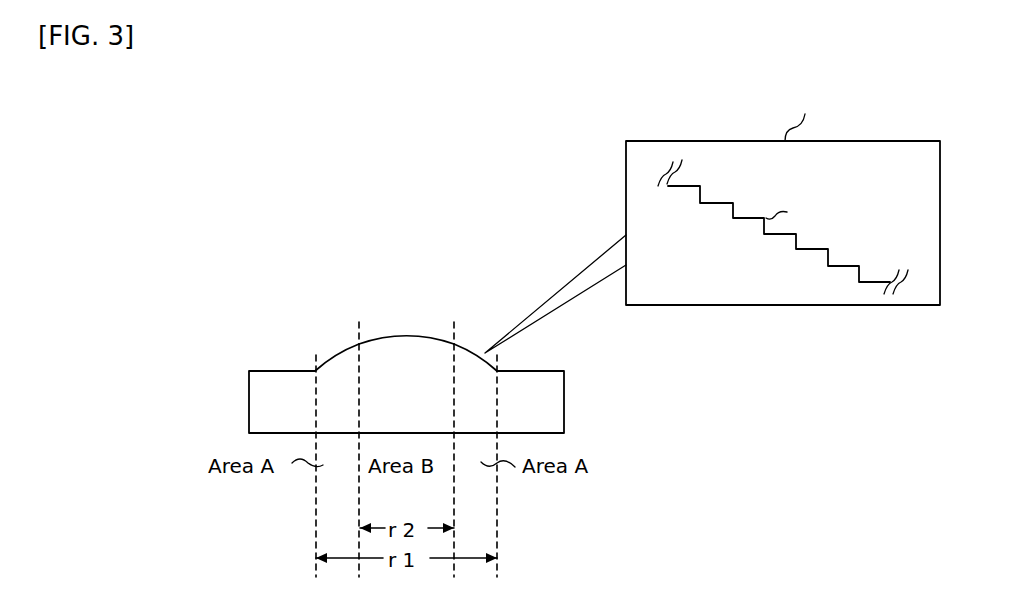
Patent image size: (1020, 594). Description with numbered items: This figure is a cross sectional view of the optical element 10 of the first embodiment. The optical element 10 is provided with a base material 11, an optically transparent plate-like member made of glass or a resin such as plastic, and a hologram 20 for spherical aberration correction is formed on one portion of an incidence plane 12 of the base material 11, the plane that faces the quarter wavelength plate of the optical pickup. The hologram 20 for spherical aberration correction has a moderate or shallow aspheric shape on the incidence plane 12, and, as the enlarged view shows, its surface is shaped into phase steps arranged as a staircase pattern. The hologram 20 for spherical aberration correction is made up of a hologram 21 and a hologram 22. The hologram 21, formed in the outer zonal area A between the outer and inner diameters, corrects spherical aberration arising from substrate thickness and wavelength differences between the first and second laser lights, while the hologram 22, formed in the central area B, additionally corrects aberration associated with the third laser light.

The optical element 10 is at (266, 290).
The base material 11 is at (550, 398).
The incidence plane 12 is at (532, 371).
The hologram for spherical aberration correction 20 is at (298, 310).
The hologram 21 is at (345, 350).
The hologram 22 is at (406, 338).